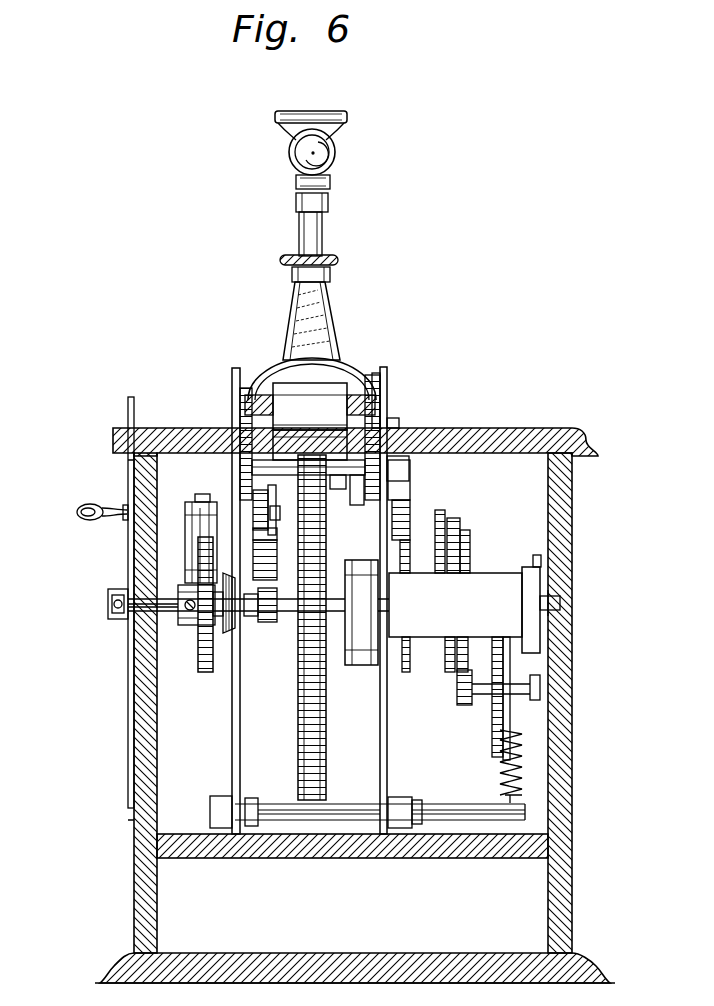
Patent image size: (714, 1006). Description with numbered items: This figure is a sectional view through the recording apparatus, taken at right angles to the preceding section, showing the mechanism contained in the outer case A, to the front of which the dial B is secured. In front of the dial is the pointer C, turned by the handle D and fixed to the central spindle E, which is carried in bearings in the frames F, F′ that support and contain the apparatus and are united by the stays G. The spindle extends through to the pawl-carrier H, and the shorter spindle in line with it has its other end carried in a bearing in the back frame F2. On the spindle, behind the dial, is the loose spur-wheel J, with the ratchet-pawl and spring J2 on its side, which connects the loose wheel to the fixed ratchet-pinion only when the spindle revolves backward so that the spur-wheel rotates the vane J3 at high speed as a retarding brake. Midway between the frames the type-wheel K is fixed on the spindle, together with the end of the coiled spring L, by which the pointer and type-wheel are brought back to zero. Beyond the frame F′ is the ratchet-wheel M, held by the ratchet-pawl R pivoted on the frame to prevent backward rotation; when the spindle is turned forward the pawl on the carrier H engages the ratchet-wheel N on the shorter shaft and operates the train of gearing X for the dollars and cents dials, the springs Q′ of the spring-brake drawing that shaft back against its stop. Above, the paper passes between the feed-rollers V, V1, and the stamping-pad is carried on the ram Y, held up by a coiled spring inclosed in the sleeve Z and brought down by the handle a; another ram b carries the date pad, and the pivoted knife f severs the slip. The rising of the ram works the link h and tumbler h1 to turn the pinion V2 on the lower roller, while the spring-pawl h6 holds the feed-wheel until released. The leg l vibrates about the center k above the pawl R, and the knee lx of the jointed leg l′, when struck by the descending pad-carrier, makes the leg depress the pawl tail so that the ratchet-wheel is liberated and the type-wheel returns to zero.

The outer case A is at (200, 430).
The dial B is at (134, 690).
The pointer C is at (127, 550).
The handle D is at (75, 512).
The central spindle E is at (106, 607).
The frame F is at (232, 712).
The frame F′ is at (388, 742).
The back frame F2 is at (465, 604).
The stays G is at (340, 485).
The shaft G′ is at (300, 808).
The pawl-carrier H is at (450, 530).
The spur-wheel J is at (198, 647).
The ratchet-pawl and spring J2 is at (225, 578).
The vane J3 is at (192, 527).
The type-wheel K is at (318, 560).
The center k is at (275, 551).
The coiled spring L is at (361, 612).
The ratchet-wheel M is at (407, 568).
The ratchet-wheel N is at (446, 657).
The ratchet-pawl R is at (408, 520).
The train of gearing X is at (492, 645).
The ram Y is at (322, 237).
The sleeve Z is at (326, 317).
The feed-roller V is at (310, 406).
The feed-roller V1 is at (308, 452).
The pinion V2 is at (246, 408).
The handle a is at (300, 153).
The ram b is at (311, 115).
The pivoted knife f is at (562, 602).
The link h is at (274, 498).
The tumbler h1 is at (275, 517).
The spring-pawl h6 is at (258, 535).
The leg l is at (398, 424).
The knee lx is at (380, 412).
The leg l′ is at (358, 505).
The springs Q′ is at (498, 793).